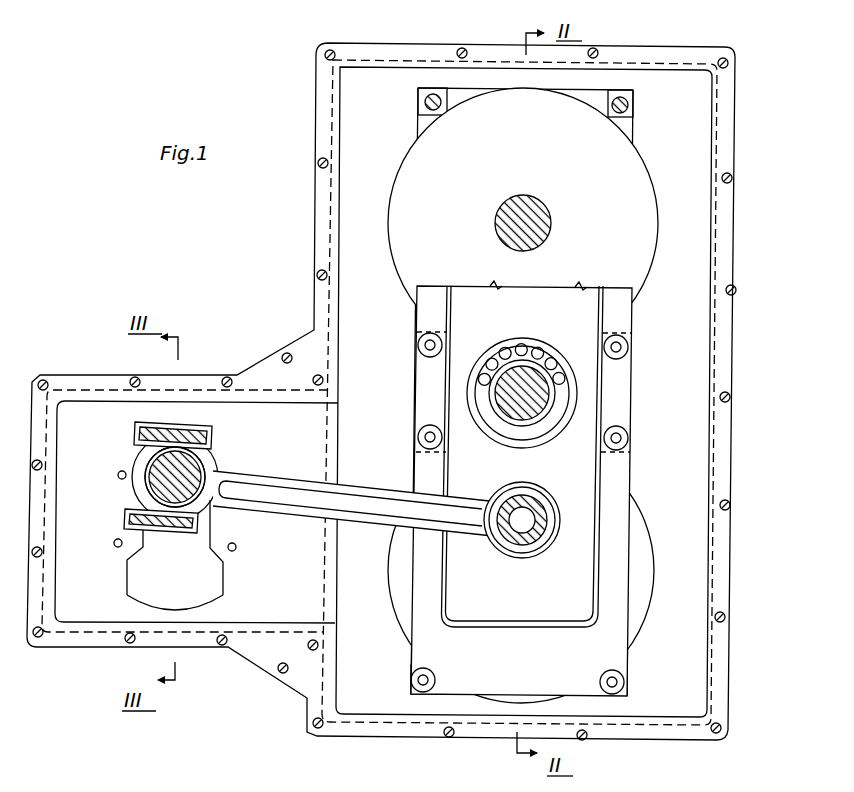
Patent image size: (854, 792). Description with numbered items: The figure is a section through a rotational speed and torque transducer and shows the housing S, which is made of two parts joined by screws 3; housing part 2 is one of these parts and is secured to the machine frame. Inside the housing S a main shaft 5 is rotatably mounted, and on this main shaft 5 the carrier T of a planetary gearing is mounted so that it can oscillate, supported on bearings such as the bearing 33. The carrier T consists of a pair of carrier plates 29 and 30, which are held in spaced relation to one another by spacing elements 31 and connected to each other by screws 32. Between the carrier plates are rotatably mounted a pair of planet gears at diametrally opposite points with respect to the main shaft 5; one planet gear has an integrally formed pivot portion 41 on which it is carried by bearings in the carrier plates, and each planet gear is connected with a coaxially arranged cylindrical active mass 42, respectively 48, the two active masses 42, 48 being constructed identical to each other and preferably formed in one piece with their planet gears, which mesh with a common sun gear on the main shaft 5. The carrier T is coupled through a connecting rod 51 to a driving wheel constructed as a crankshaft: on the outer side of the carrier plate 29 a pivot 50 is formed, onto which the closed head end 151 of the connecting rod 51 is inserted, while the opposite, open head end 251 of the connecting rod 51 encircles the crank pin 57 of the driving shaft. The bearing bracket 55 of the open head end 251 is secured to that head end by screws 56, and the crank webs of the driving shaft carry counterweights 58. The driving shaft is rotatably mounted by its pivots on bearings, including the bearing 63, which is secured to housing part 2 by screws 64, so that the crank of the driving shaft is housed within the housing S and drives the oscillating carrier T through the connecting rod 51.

The housing part 2 is at (318, 95).
The screws 3 is at (326, 53).
The housing S is at (312, 189).
The carrier of the planetary gearing T is at (636, 134).
The carrier plate 30 is at (418, 120).
The spacing elements 31 is at (418, 110).
The screws 32 is at (430, 100).
The bearing 33 is at (522, 348).
The pivot portion 41 is at (534, 207).
The active mass 42 is at (652, 182).
The active mass 48 is at (643, 517).
The carrier plate 29 is at (416, 642).
The main shaft 5 is at (508, 410).
The pivot 50 is at (530, 500).
The closed head end 151 is at (527, 548).
The connecting rod 51 is at (322, 473).
The bearing bracket 55 is at (140, 468).
The screws 56 is at (212, 440).
The crank pin 57 is at (163, 472).
The open head end 251 is at (215, 462).
The counterweights 58 is at (130, 582).
The bearing 63 is at (226, 522).
The screws 64 is at (119, 478).